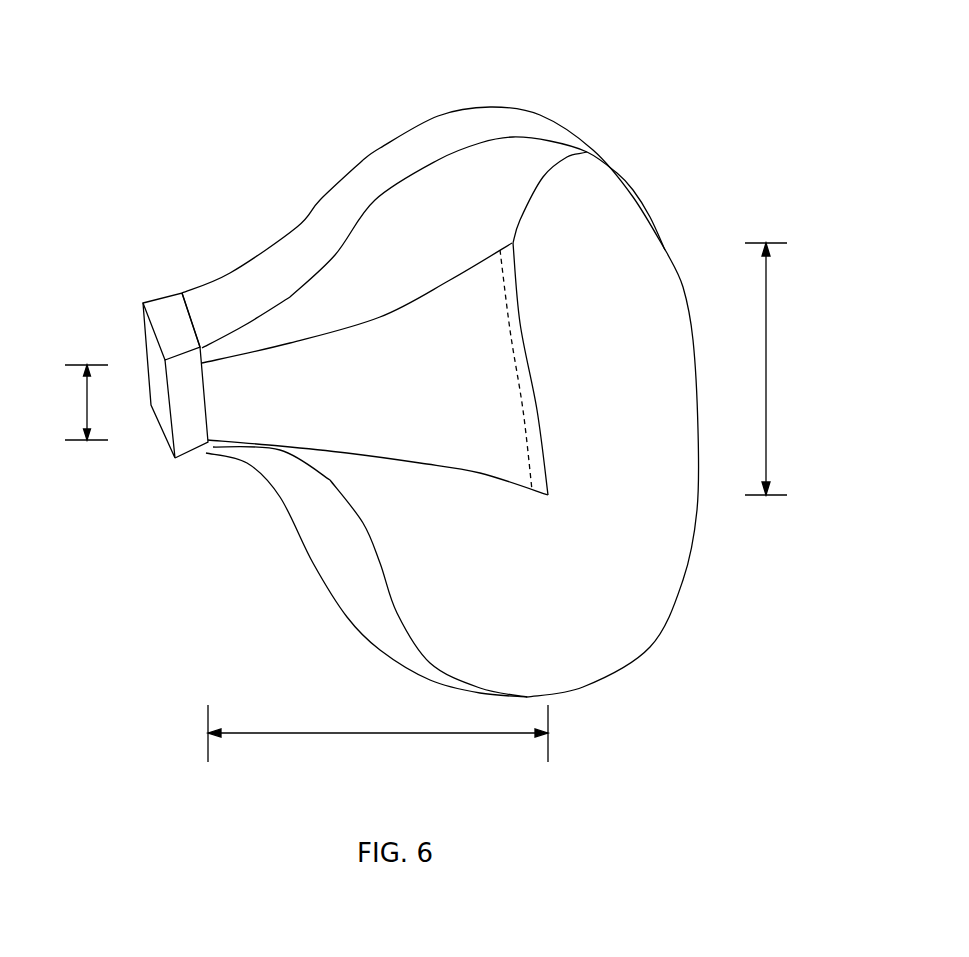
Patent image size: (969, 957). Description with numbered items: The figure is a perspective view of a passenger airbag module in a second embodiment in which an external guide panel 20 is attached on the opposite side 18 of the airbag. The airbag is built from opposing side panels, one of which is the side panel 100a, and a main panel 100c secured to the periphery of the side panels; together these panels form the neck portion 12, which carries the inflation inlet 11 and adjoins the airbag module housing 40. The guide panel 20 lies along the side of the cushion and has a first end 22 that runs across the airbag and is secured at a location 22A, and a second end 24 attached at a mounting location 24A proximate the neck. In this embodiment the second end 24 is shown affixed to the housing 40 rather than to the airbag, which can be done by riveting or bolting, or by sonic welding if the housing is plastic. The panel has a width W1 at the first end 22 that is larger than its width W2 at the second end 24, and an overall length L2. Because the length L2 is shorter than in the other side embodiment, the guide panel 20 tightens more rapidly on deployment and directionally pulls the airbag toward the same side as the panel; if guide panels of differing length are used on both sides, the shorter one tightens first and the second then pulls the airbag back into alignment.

The inflation inlet 11 is at (152, 355).
The neck portion 12 is at (205, 290).
The opposite side 18 is at (663, 290).
The external guide panel 20 is at (360, 347).
The first end 22 is at (587, 152).
The securing location 22A is at (528, 493).
The second end 24 is at (165, 360).
The mounting location 24A is at (212, 357).
The airbag module housing 40 is at (167, 310).
The side panel 100a is at (640, 607).
The main panel 100c is at (428, 152).
The panel width at first end W1 is at (766, 368).
The panel width at second end W2 is at (85, 403).
The guide panel length L2 is at (380, 733).